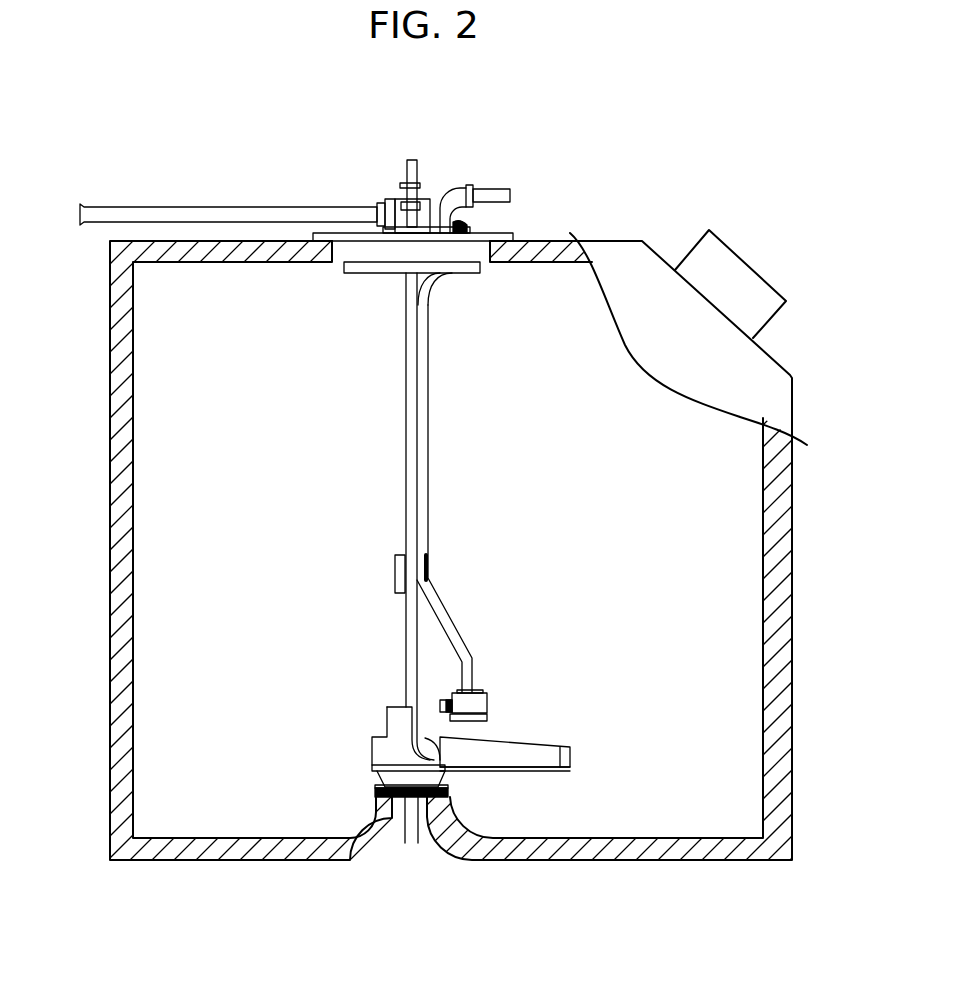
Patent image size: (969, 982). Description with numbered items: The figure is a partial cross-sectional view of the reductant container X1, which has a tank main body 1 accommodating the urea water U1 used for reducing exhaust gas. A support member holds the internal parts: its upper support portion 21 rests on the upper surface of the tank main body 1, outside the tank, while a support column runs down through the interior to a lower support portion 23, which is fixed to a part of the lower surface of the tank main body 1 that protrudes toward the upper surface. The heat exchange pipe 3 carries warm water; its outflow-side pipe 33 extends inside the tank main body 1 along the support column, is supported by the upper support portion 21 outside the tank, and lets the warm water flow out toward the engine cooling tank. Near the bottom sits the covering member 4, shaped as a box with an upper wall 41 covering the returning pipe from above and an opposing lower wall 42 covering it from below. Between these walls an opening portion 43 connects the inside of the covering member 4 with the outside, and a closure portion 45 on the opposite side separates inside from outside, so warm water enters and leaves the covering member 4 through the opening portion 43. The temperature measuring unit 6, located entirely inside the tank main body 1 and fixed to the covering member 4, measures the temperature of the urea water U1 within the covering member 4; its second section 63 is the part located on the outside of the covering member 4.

The tank main body 1 is at (793, 490).
The reductant container X1 is at (636, 128).
The urea water U1 is at (740, 632).
The heat exchange pipe 3 is at (451, 553).
The upper support portion 21 is at (513, 233).
The lower support portion 23 is at (402, 775).
The outflow-side pipe 33 is at (405, 532).
The temperature measuring unit 6 is at (628, 525).
The second section 63 is at (473, 707).
The covering member 4 is at (614, 826).
The upper wall 41 is at (525, 730).
The lower wall 42 is at (497, 768).
The closure portion 45 is at (570, 757).
The opening portion 43 is at (418, 793).